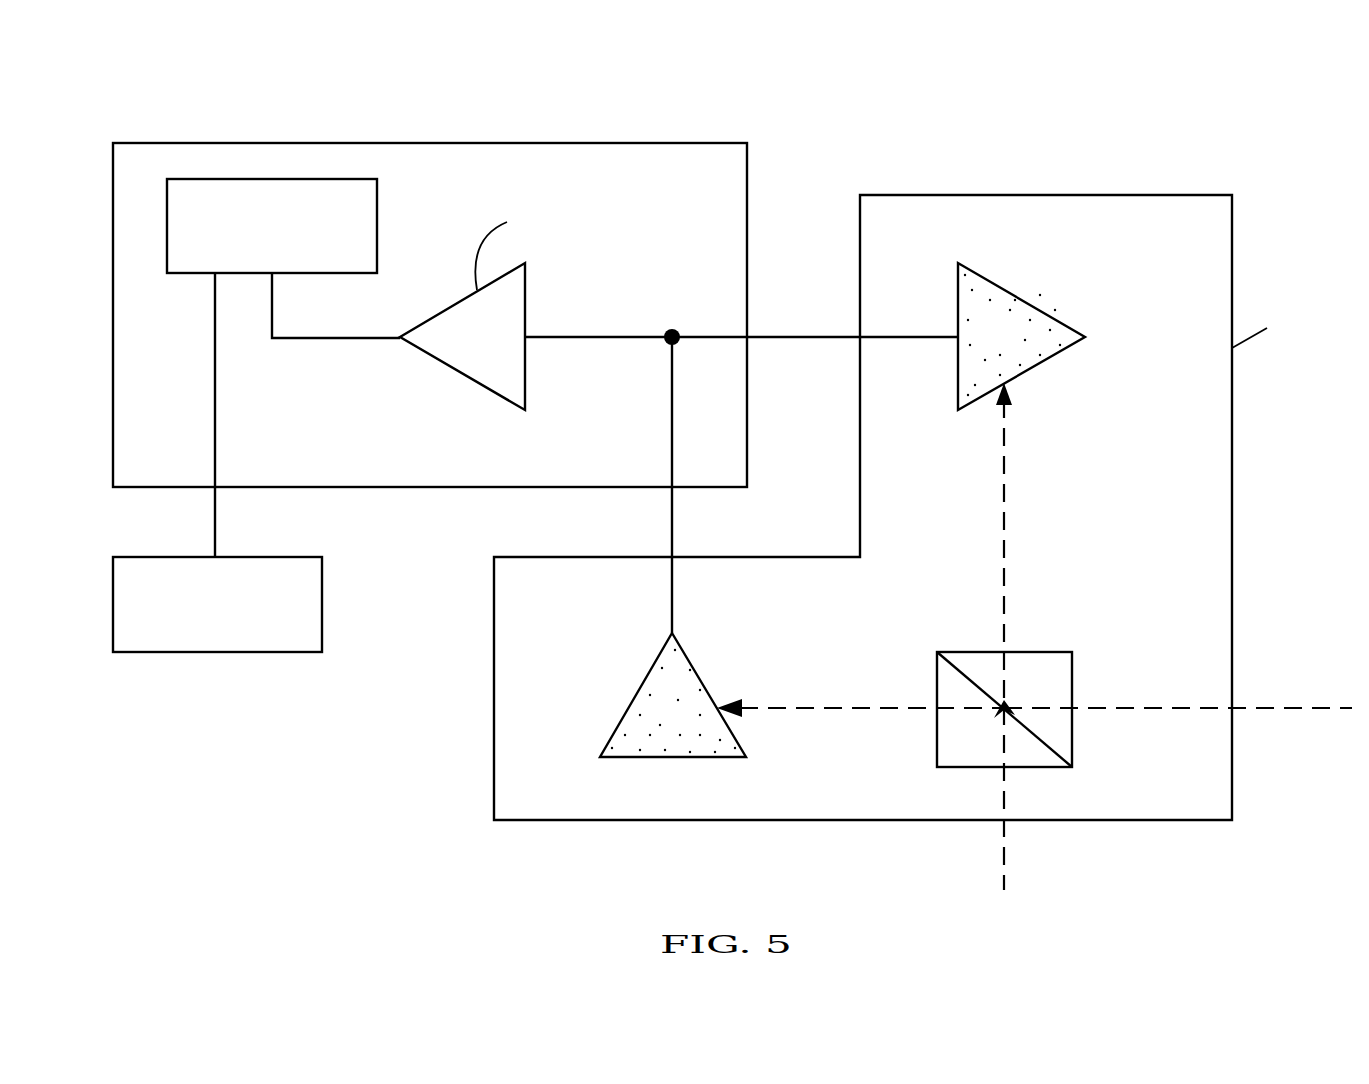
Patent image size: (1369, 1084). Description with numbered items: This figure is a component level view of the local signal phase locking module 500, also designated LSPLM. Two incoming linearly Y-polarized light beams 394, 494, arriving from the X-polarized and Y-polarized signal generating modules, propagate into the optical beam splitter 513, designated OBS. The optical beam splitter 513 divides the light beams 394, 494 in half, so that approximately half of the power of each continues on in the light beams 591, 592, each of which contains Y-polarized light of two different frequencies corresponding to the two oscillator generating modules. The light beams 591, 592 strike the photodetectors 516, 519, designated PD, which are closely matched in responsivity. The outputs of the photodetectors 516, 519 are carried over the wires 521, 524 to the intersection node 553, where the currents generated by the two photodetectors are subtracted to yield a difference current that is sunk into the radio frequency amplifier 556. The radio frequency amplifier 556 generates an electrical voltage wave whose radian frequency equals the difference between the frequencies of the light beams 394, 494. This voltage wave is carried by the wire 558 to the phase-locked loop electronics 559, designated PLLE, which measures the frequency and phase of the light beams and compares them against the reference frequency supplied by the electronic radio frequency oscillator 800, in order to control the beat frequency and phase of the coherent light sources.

The local signal phase locking module 500 is at (930, 462).
The phase-locked loop electronics 559 is at (298, 224).
The electronic radio frequency oscillator 800 is at (245, 601).
The wire 558 is at (335, 340).
The radio frequency amplifier 556 is at (501, 352).
The intersection node 553 is at (650, 335).
The wire 521 is at (767, 335).
The wire 524 is at (672, 522).
The photodetector 516 is at (1033, 305).
The photodetector 519 is at (622, 758).
The optical beam splitter 513 is at (1018, 650).
The light beam 591 is at (1005, 528).
The light beam 592 is at (773, 708).
The incoming linearly Y-polarized light beam 494 is at (1223, 698).
The incoming linearly Y-polarized light beam 394 is at (1005, 845).